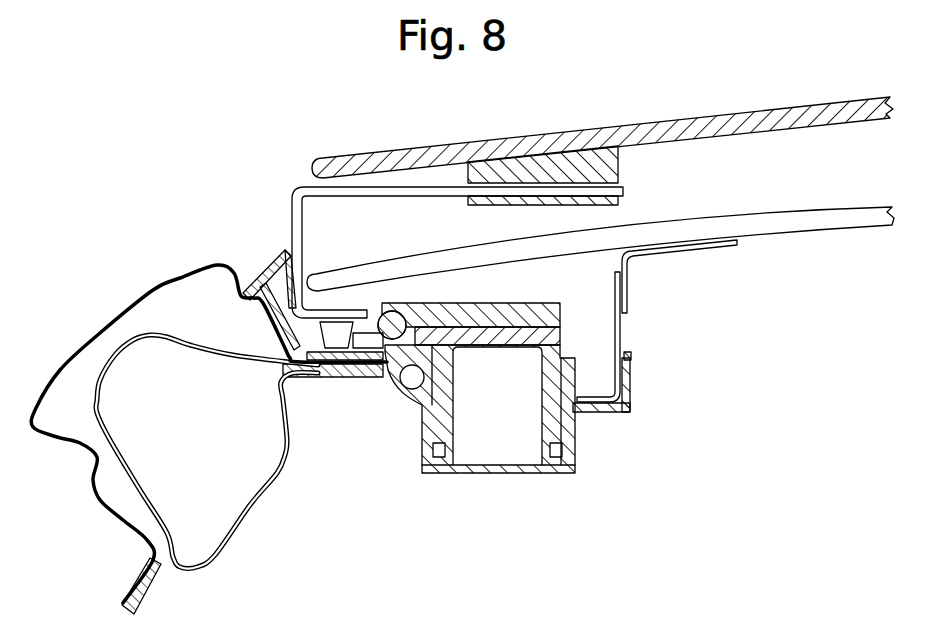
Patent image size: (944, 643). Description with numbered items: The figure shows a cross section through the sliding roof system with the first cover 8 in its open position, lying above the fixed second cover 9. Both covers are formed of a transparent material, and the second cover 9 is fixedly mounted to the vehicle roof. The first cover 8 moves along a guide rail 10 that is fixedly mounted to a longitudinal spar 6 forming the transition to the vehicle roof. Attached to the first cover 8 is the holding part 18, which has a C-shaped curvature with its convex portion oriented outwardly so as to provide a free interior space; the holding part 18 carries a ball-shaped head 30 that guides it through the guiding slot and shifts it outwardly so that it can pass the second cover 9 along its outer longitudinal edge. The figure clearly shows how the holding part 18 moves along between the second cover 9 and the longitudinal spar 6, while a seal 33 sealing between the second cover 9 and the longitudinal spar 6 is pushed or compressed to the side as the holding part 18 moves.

The longitudinal spar 6 is at (278, 473).
The first cover 8 is at (716, 118).
The second cover 9 is at (797, 230).
The guide rail 10 is at (578, 452).
The holding part 18 is at (422, 190).
The ball-shaped head 30 is at (383, 380).
The seal 33 is at (276, 254).